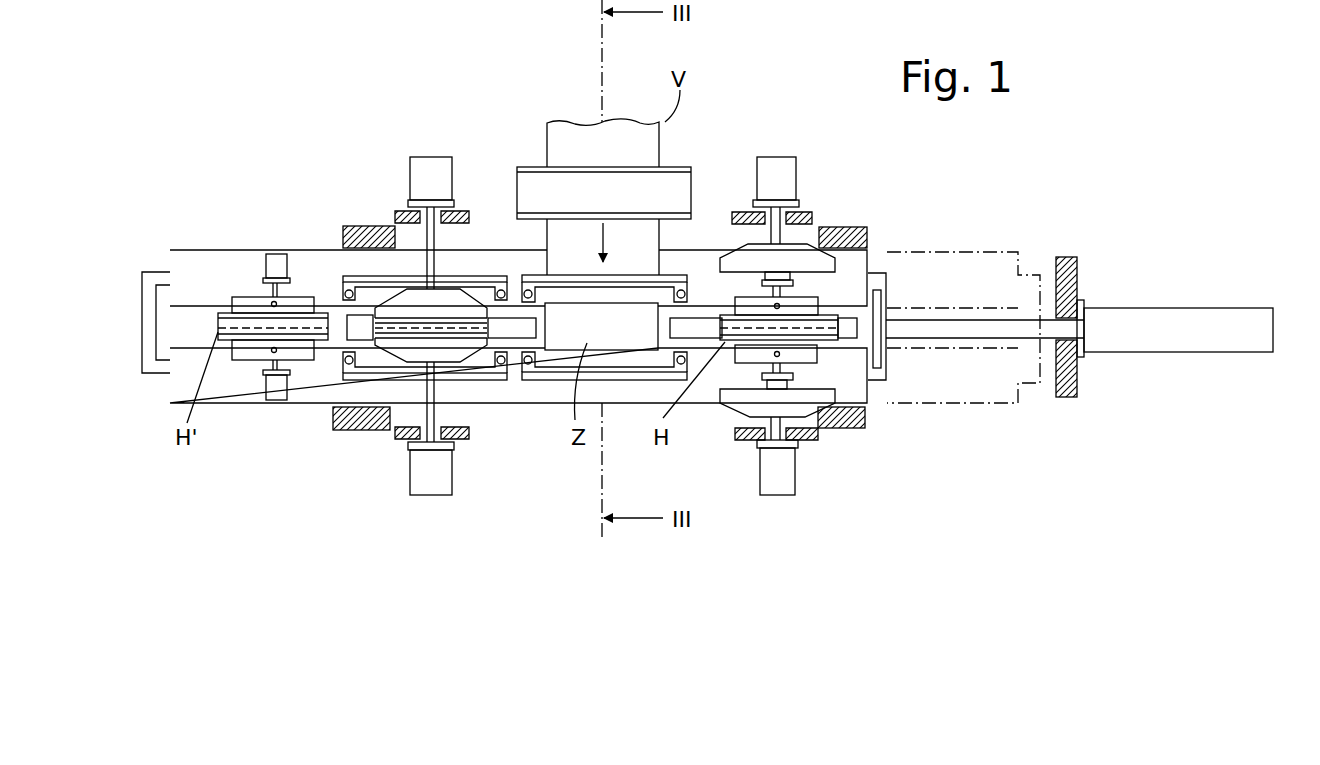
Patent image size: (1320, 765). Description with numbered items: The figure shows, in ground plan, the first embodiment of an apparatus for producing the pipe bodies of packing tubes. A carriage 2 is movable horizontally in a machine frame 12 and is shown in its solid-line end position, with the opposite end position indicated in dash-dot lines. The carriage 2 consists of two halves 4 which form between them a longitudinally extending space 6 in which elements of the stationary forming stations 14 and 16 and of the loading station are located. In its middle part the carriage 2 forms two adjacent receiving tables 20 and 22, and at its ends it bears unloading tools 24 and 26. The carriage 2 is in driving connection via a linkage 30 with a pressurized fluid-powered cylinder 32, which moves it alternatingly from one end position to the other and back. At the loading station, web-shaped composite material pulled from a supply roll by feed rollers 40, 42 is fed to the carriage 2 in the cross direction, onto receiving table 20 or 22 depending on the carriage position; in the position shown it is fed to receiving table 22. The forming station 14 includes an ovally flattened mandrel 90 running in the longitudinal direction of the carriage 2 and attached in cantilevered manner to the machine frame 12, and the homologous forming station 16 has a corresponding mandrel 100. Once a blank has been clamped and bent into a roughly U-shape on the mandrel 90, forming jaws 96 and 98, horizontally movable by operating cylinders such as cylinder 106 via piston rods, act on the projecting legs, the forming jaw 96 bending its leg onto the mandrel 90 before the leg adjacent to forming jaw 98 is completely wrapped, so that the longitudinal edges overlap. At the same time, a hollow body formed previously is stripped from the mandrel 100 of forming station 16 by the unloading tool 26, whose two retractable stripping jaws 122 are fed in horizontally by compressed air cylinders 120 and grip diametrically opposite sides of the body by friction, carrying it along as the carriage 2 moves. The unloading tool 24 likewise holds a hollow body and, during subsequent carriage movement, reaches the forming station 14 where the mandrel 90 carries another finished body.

The carriage 2 is at (262, 242).
The halves 4 is at (181, 250).
The space 6 is at (180, 310).
The machine frame 12 is at (343, 236).
The forming station 14 is at (389, 357).
The forming station 16 is at (736, 415).
The receiving table 20 is at (478, 386).
The receiving table 22 is at (627, 384).
The unloading tool 24 is at (247, 364).
The unloading tool 26 is at (830, 296).
The linkage 30 is at (972, 322).
The pressurized fluid-powered cylinder 32 is at (1120, 307).
The feed roller 40 is at (668, 166).
The feed roller 42 is at (688, 185).
The mandrel 90 is at (347, 320).
The forming jaw 96 is at (410, 363).
The forming jaw 98 is at (462, 280).
The mandrel 100 is at (850, 330).
The operating cylinder 106 is at (431, 157).
The compressed air cylinder 120 is at (268, 400).
The stripping jaw 122 is at (230, 353).